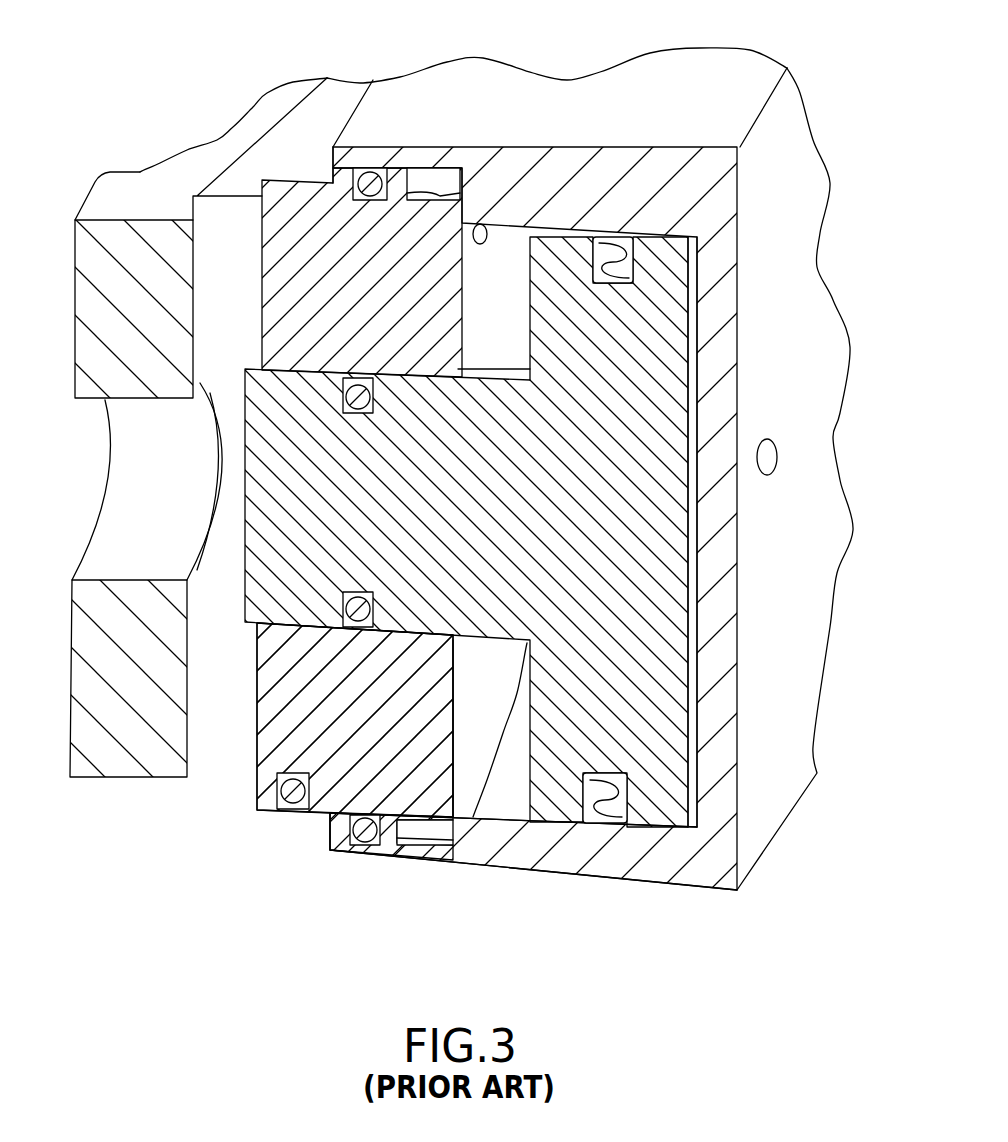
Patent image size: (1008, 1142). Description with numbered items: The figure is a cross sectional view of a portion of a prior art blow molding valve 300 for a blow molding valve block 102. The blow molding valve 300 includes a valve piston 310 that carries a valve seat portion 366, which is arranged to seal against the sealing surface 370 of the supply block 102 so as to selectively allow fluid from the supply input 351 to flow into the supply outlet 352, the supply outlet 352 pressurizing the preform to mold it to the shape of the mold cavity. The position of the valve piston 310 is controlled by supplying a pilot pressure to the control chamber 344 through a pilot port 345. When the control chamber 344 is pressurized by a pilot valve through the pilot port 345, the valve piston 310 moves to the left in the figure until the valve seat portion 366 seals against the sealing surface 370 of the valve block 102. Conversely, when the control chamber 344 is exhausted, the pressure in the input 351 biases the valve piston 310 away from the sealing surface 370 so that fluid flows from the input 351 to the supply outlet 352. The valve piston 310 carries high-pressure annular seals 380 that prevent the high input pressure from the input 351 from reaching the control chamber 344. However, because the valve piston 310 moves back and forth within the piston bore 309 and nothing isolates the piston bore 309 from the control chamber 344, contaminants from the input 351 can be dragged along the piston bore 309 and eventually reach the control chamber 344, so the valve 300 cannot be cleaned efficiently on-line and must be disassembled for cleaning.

The blow molding valve 300 is at (845, 237).
The blow molding valve block 102 is at (553, 857).
The sealing surface 370 is at (207, 313).
The supply input 351 is at (97, 543).
The valve seat portion 366 is at (248, 330).
The supply outlet 352 is at (252, 340).
The valve piston 310 is at (497, 600).
The high-pressure annular seals 380 is at (350, 377).
The piston bore 309 is at (313, 627).
The control chamber 344 is at (688, 810).
The pilot port 345 is at (770, 447).